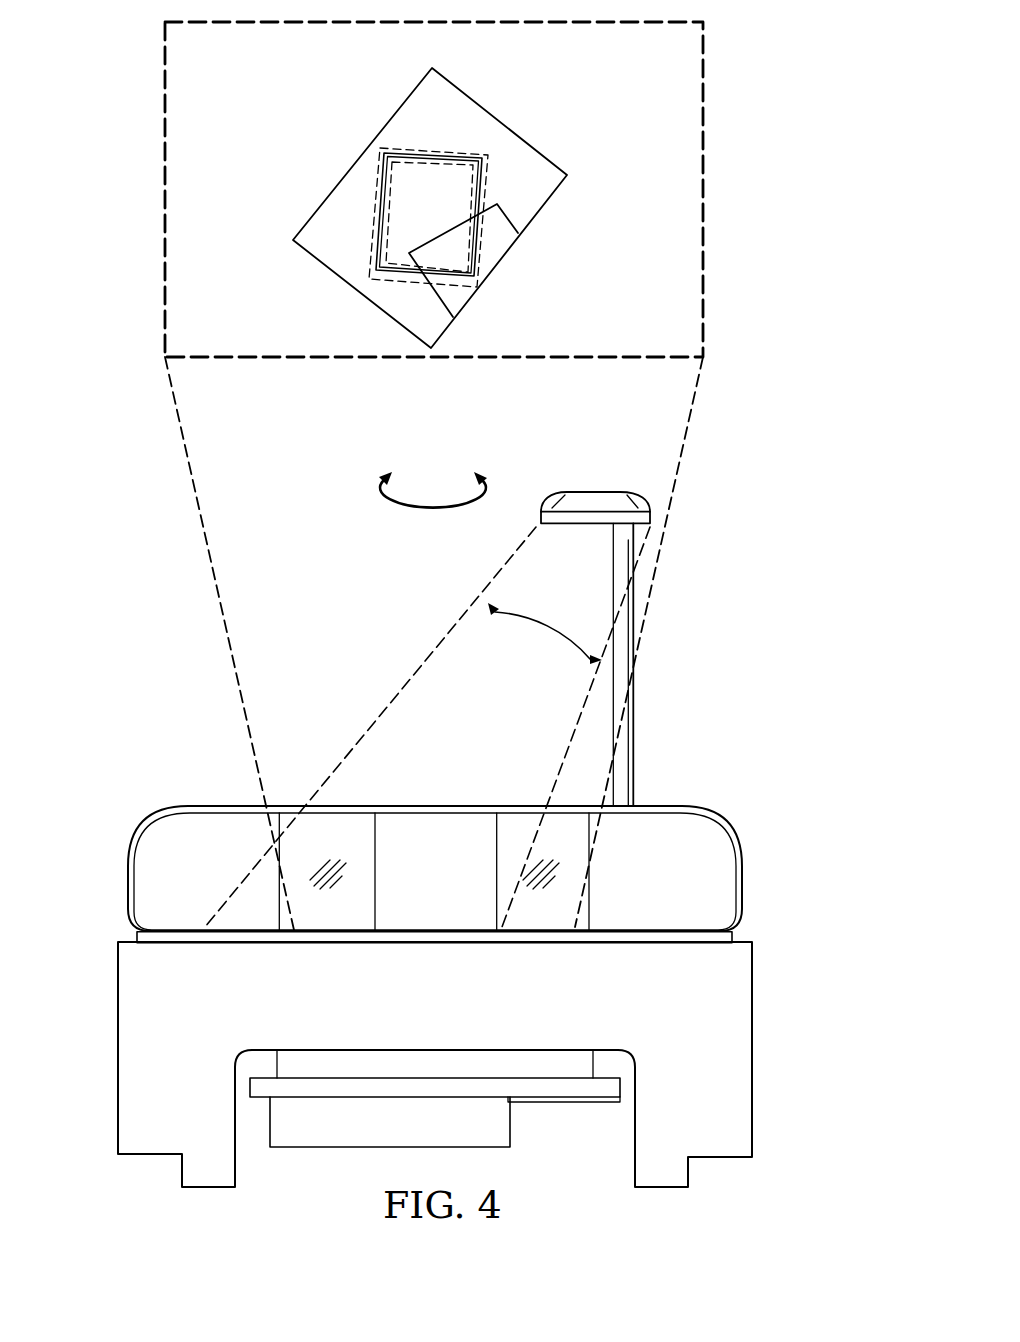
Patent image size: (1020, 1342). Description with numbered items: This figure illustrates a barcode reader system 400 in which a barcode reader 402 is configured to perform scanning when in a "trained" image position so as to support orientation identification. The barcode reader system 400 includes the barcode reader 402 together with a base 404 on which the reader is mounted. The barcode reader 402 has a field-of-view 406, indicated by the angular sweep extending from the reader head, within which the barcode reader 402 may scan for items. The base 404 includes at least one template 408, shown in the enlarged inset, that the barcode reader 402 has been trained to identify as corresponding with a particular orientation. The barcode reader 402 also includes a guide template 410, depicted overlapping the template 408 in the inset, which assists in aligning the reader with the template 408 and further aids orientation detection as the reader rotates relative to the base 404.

The barcode reader system 400 is at (88, 70).
The barcode reader 402 is at (603, 492).
The base 404 is at (752, 1048).
The field-of-view 406 is at (533, 647).
The template 408 is at (362, 155).
The guide template 410 is at (482, 233).